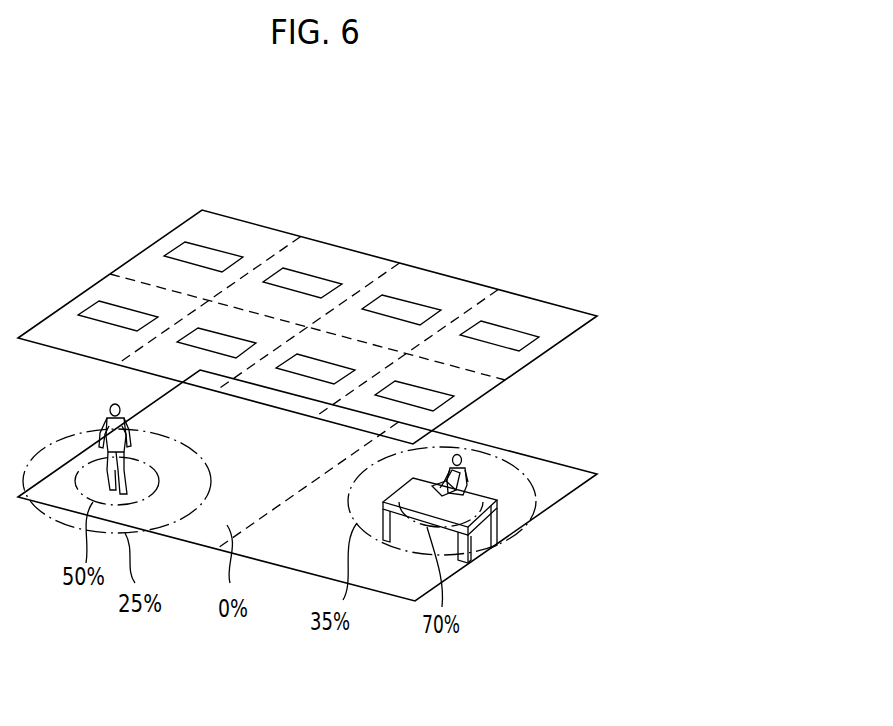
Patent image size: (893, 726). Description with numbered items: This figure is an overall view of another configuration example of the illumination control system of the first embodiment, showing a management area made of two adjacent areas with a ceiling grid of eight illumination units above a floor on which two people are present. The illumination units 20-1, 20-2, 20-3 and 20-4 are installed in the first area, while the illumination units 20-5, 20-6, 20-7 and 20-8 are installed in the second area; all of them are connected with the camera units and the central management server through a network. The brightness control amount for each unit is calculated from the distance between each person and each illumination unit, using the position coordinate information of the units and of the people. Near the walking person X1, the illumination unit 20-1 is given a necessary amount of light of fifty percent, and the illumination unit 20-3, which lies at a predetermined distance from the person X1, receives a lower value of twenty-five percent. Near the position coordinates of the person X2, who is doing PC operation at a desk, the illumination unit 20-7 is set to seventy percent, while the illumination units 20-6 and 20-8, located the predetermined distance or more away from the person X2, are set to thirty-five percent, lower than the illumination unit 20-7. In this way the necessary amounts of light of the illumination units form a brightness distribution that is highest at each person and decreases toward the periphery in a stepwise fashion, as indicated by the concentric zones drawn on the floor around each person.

The illumination unit 20-1 is at (86, 314).
The illumination unit 20-2 is at (175, 250).
The illumination unit 20-3 is at (224, 332).
The illumination unit 20-4 is at (318, 274).
The illumination unit 20-5 is at (292, 377).
The illumination unit 20-6 is at (410, 300).
The illumination unit 20-7 is at (452, 392).
The illumination unit 20-8 is at (523, 333).
The walking person X1 is at (112, 418).
The person doing PC operation X2 is at (473, 478).